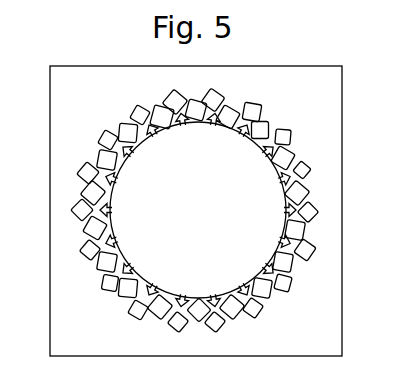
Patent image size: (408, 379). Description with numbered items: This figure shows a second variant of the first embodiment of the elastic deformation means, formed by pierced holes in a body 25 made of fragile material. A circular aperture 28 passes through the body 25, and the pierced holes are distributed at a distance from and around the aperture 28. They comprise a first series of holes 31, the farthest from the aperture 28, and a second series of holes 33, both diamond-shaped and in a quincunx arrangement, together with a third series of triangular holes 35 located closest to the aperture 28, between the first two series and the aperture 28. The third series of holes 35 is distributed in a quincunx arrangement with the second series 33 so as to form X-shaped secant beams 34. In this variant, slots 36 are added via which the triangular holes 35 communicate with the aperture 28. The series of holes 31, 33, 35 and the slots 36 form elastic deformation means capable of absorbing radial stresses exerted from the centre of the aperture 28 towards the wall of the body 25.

The body 25 is at (72, 125).
The aperture 28 is at (140, 195).
The first series of holes 31 is at (84, 229).
The second series of holes 33 is at (300, 195).
The X-shaped secant beams 34 is at (214, 121).
The triangular holes 35 is at (240, 132).
The slots 36 is at (213, 300).